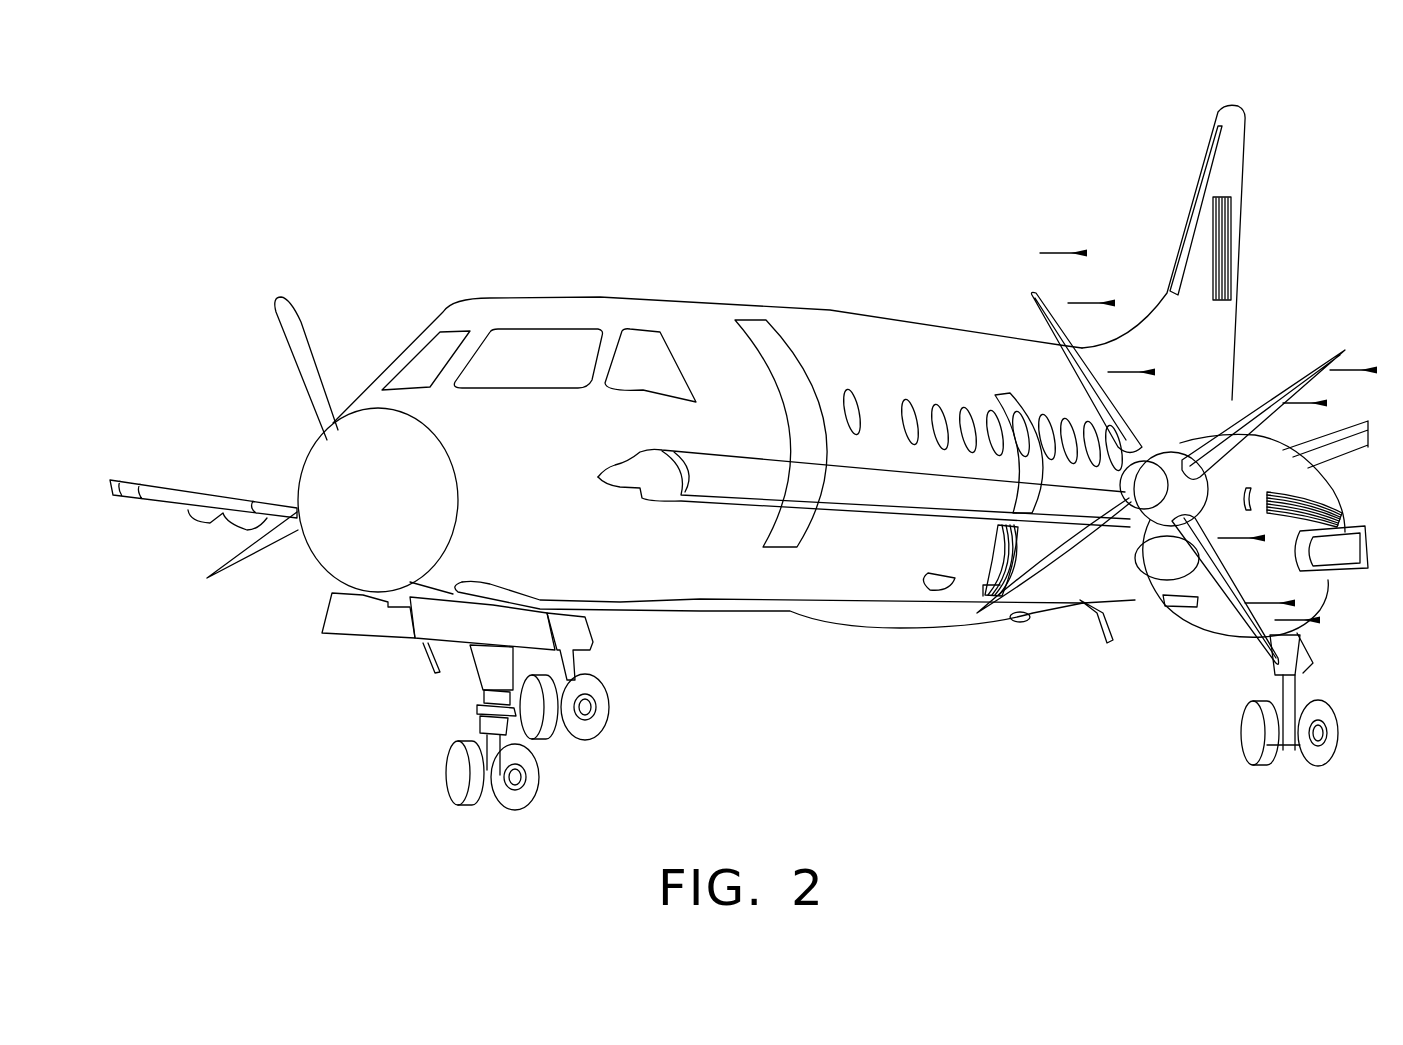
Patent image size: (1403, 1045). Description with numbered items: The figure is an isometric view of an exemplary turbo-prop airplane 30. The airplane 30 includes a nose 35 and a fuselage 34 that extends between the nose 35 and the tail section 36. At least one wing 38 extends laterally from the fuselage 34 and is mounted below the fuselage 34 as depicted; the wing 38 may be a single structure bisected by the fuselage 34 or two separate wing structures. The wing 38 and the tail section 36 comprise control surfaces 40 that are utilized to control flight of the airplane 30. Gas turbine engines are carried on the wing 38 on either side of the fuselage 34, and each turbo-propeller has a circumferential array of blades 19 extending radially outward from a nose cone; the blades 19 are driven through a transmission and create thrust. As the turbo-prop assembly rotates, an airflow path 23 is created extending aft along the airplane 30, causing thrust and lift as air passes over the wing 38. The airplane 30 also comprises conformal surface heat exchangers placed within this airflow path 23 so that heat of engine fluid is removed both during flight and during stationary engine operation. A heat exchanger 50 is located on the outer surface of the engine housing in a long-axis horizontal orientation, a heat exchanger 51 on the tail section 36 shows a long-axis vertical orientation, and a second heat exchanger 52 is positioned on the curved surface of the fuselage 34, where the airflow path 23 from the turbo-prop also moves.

The blades 19 is at (288, 323).
The airflow path 23 is at (1065, 252).
The airplane 30 is at (722, 172).
The fuselage 34 is at (823, 326).
The nose 35 is at (342, 540).
The tail section 36 is at (1278, 105).
The wing 38 is at (158, 487).
The control surfaces 40 is at (1235, 145).
The heat exchanger 50 is at (1287, 493).
The heat exchanger 51 is at (1228, 230).
The heat exchanger 52 is at (995, 553).